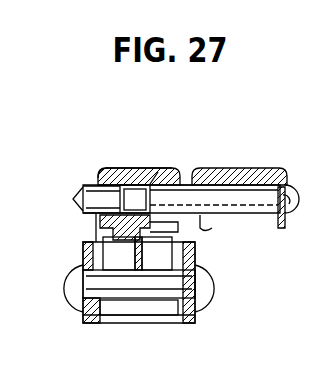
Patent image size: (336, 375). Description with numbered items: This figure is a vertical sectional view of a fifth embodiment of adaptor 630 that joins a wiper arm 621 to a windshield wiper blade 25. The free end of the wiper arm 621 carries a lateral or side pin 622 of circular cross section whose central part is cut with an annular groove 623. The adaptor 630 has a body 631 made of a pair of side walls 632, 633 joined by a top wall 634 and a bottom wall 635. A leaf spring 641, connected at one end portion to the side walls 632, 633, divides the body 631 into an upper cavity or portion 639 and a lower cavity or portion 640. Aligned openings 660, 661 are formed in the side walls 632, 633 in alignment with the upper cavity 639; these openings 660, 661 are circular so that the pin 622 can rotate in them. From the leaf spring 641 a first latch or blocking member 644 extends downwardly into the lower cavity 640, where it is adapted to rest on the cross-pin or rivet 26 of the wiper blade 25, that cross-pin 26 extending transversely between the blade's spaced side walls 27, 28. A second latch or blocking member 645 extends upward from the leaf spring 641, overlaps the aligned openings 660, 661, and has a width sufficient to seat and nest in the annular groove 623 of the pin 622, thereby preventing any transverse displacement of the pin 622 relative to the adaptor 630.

The windshield wiper blade 25 is at (108, 327).
The cross-pin or rivet 26 is at (73, 290).
The side wall 27 is at (192, 252).
The side wall 28 is at (110, 250).
The wiper arm 621 is at (287, 143).
The lateral or side pin 622 is at (108, 167).
The annular groove 623 is at (181, 183).
The adaptor 630 is at (147, 160).
The body 631 is at (182, 240).
The side wall 632 is at (99, 237).
The side wall 633 is at (205, 226).
The top wall 634 is at (127, 167).
The bottom wall 635 is at (167, 324).
The upper cavity or portion 639 is at (153, 177).
The lower cavity or portion 640 is at (83, 250).
The leaf spring 641 is at (95, 232).
The first latch or blocking member 644 is at (147, 253).
The second latch or blocking member 645 is at (80, 217).
The opening 660 is at (189, 185).
The opening 661 is at (76, 197).